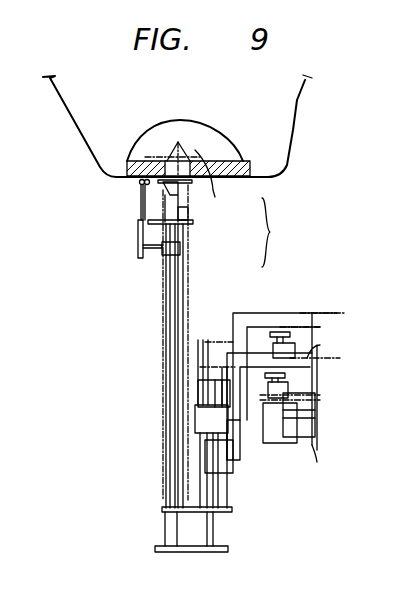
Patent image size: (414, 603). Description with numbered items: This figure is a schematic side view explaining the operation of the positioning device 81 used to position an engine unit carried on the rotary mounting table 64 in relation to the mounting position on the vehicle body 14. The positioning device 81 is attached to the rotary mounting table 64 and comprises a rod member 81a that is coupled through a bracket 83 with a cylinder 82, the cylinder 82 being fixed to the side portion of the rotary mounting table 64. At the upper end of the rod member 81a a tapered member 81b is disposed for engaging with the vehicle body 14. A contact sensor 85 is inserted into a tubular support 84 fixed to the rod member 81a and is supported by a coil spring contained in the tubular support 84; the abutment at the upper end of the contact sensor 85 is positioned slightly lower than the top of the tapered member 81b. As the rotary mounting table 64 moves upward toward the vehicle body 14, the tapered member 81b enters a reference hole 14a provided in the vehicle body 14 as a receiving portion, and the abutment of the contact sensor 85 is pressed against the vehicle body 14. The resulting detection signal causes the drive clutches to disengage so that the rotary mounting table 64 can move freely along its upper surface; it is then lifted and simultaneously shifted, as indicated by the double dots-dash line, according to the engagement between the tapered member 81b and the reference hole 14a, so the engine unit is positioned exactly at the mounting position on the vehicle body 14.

The vehicle body 14 is at (306, 104).
The reference hole 14a is at (167, 170).
The contact sensor 85 is at (140, 184).
The tapered member 81b is at (195, 160).
The positioning device 81 is at (280, 232).
The rod member 81a is at (177, 300).
The tubular support 84 is at (143, 266).
The cylinder 82 is at (193, 390).
The rotary mounting table 64 is at (307, 350).
The bracket 83 is at (157, 547).